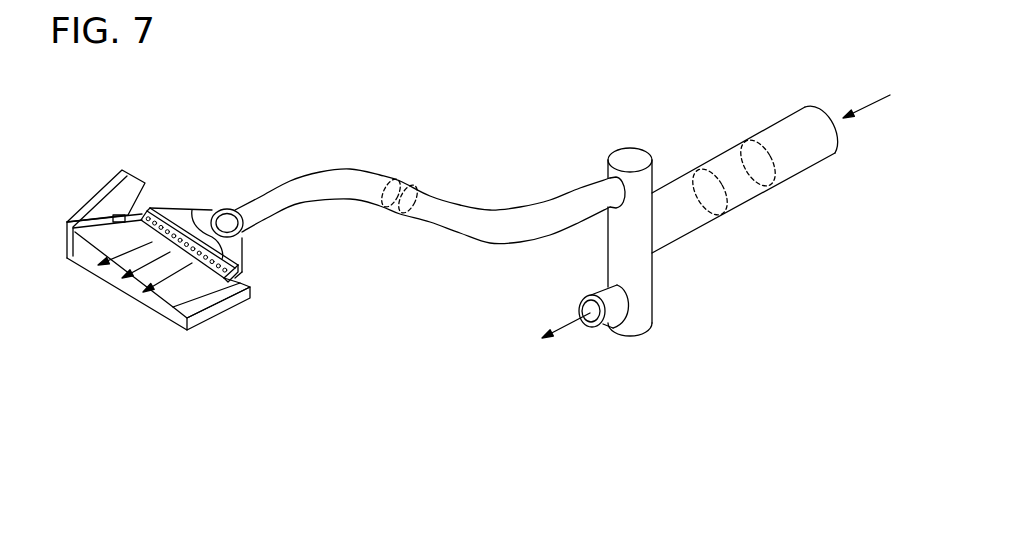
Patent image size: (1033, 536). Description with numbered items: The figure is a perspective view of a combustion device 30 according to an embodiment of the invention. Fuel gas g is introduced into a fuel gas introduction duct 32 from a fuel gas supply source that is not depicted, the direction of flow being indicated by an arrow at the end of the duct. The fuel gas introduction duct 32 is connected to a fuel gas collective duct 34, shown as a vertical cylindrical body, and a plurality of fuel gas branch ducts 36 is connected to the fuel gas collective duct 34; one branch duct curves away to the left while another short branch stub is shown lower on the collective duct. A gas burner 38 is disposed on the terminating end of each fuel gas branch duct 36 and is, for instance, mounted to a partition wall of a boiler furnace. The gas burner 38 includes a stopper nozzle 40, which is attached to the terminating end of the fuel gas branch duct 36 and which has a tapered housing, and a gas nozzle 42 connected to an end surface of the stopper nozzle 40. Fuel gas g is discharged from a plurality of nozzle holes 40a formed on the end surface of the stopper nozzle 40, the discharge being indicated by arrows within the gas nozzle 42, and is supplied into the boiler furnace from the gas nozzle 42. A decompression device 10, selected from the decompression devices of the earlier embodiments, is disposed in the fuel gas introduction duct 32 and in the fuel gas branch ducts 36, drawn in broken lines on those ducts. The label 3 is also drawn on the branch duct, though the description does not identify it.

The exhaust duct 3 is at (460, 220).
The decompression device 10 is at (400, 188).
The combustion device 30 is at (486, 172).
The fuel gas introduction duct 32 is at (788, 132).
The fuel gas collective duct 34 is at (630, 158).
The fuel gas branch duct 36 is at (545, 203).
The gas burner 38 is at (330, 277).
The stopper nozzle 40 is at (232, 257).
The nozzle holes 40a is at (213, 275).
The gas nozzle 42 is at (150, 313).
The fuel gas g is at (122, 258).